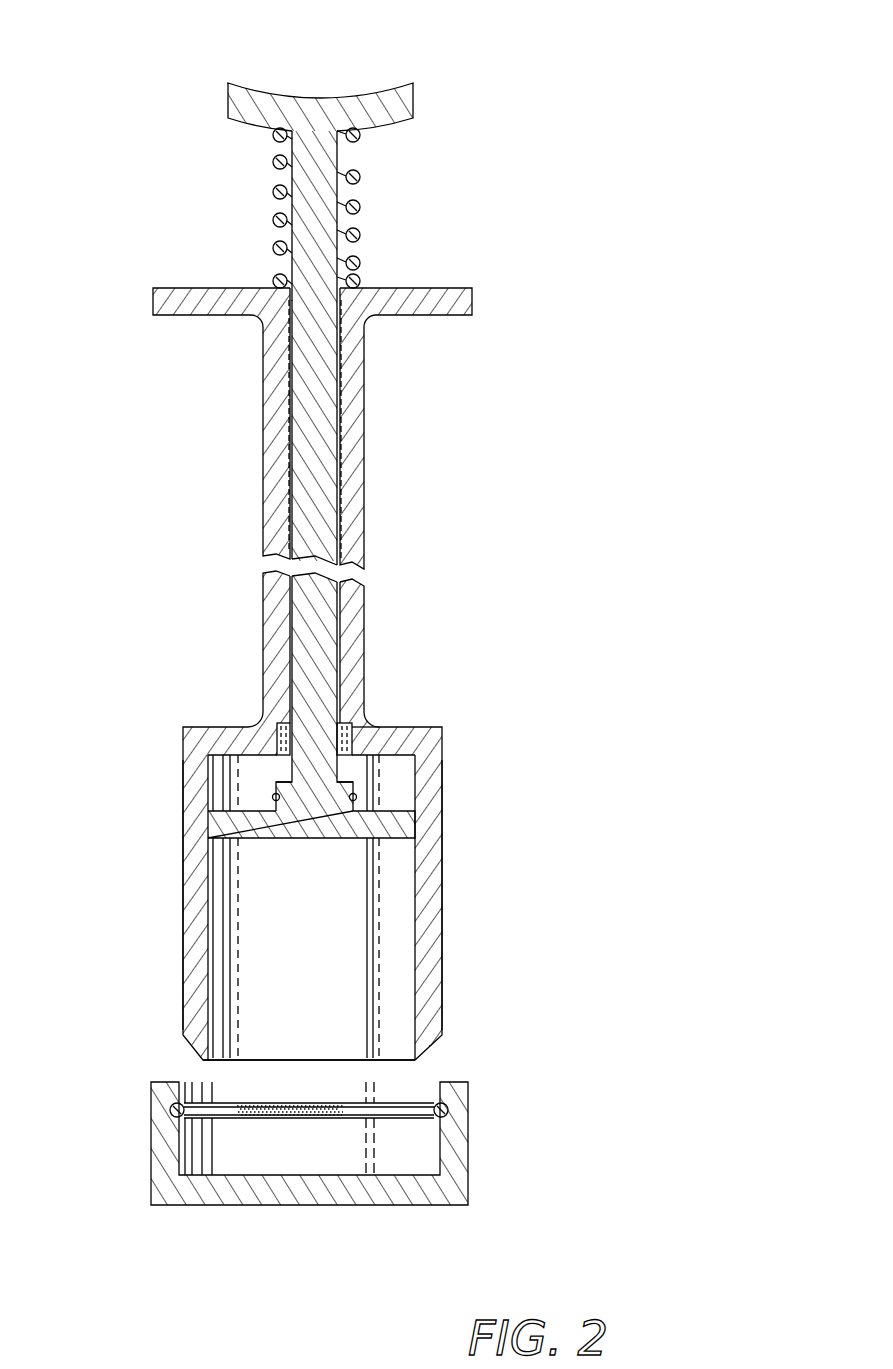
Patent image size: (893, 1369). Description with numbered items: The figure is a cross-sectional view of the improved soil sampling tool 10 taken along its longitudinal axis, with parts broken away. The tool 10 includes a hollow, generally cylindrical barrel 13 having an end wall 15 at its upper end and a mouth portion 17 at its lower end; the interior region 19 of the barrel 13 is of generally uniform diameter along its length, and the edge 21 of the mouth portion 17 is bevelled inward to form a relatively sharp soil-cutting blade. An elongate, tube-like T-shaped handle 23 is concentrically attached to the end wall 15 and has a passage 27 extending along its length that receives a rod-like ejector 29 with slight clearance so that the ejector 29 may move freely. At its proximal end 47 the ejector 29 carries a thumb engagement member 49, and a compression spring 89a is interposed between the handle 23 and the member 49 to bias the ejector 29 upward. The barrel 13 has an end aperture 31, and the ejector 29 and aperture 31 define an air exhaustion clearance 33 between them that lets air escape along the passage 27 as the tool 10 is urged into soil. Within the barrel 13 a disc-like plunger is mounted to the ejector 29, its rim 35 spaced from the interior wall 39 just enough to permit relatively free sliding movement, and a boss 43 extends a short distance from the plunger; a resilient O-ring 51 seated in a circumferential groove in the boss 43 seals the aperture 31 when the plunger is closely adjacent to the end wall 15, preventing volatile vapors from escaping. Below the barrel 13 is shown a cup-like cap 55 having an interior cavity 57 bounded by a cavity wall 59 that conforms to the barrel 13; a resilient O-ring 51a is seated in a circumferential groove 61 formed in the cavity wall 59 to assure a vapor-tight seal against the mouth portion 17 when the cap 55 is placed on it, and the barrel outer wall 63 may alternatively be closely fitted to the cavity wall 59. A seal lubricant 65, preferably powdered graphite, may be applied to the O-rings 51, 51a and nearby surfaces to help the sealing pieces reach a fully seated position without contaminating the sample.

The sampling tool 10 is at (433, 520).
The barrel 13 is at (443, 853).
The end wall 15 is at (230, 727).
The mouth portion 17 is at (441, 975).
The interior region 19 is at (383, 895).
The edge 21 is at (415, 1063).
The handle 23 is at (363, 357).
The passage 27 is at (339, 410).
The ejector 29 is at (313, 455).
The end aperture 31 is at (364, 738).
The air exhaustion clearance 33 is at (350, 735).
The rim 35 is at (207, 840).
The interior wall 39 is at (210, 928).
The boss 43 is at (352, 781).
The proximal end 47 is at (343, 157).
The thumb engagement member 49 is at (308, 98).
The O-ring 51 is at (272, 796).
The O-ring 51a is at (210, 1102).
The cap 55 is at (470, 1143).
The interior cavity 57 is at (197, 1168).
The cavity wall 59 is at (440, 1148).
The circumferential groove 61 is at (178, 1117).
The barrel outer wall 63 is at (182, 948).
The seal lubricant 65 is at (300, 1122).
The compression spring 89a is at (362, 210).